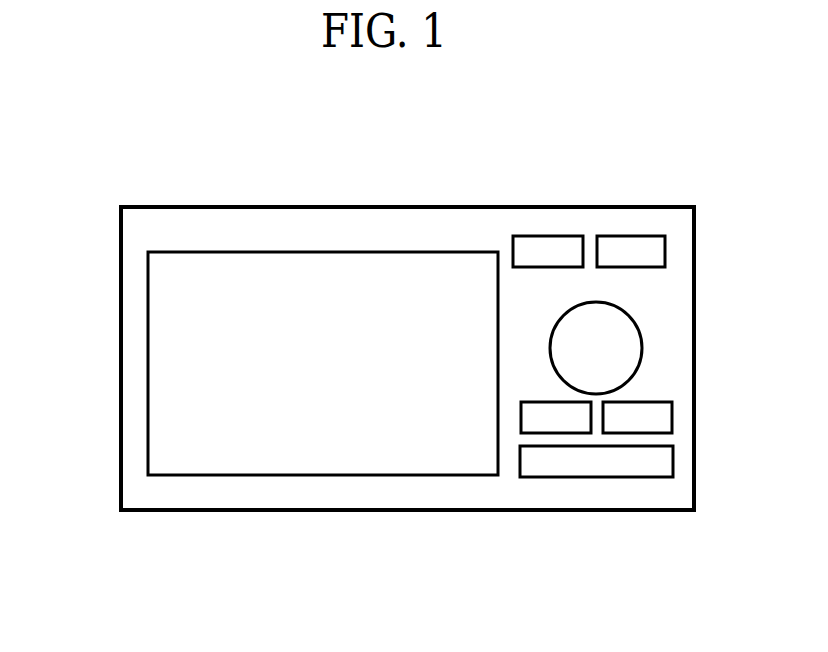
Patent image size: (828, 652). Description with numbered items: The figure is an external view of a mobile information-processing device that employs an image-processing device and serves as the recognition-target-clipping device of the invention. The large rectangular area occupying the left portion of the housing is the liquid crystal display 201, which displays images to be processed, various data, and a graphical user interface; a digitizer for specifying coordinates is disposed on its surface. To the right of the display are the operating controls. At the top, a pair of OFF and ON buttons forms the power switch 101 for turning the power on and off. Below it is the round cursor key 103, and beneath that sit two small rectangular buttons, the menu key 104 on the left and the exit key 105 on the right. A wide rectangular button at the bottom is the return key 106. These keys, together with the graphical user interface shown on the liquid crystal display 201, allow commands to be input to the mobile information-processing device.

The power switch 101 is at (625, 245).
The cursor key 103 is at (639, 353).
The menu key 104 is at (535, 418).
The exit key 105 is at (660, 418).
The return key 106 is at (587, 468).
The liquid crystal display 201 is at (190, 405).